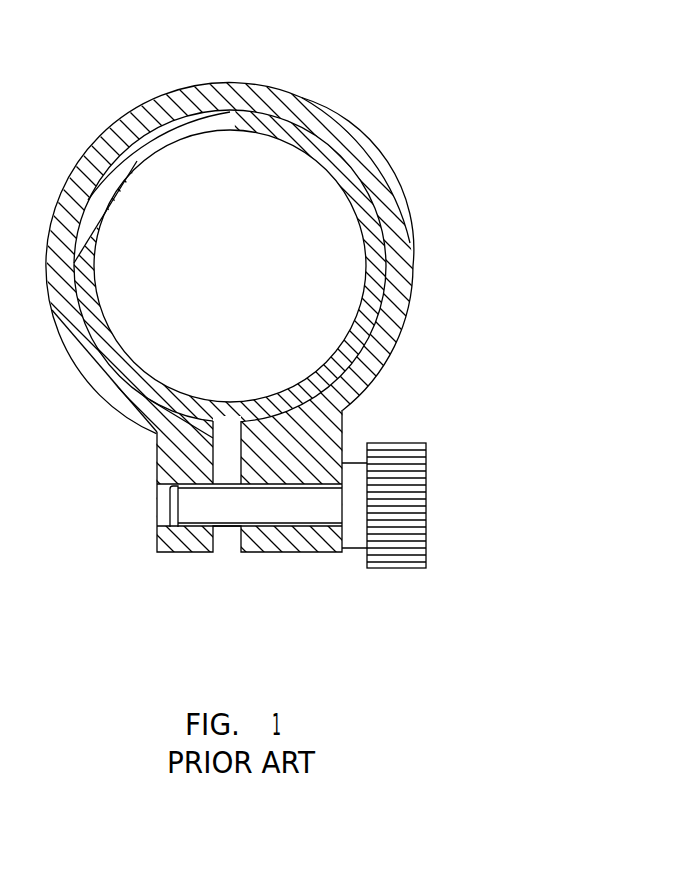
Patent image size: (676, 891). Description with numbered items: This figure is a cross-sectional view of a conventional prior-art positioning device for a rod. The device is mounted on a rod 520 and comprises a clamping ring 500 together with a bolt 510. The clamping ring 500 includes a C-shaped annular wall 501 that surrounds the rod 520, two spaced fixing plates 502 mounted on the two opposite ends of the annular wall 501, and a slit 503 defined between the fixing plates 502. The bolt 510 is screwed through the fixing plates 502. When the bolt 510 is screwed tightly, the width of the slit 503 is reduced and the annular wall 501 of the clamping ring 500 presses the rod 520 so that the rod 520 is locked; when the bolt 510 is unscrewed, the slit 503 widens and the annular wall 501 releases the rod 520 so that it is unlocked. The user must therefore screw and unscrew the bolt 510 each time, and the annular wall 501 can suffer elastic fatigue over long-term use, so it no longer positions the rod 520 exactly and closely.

The clamping ring 500 is at (413, 233).
The C-shaped annular wall 501 is at (330, 118).
The rod 520 is at (377, 296).
The fixing plates 502 is at (338, 432).
The slit 503 is at (225, 542).
The bolt 510 is at (412, 594).